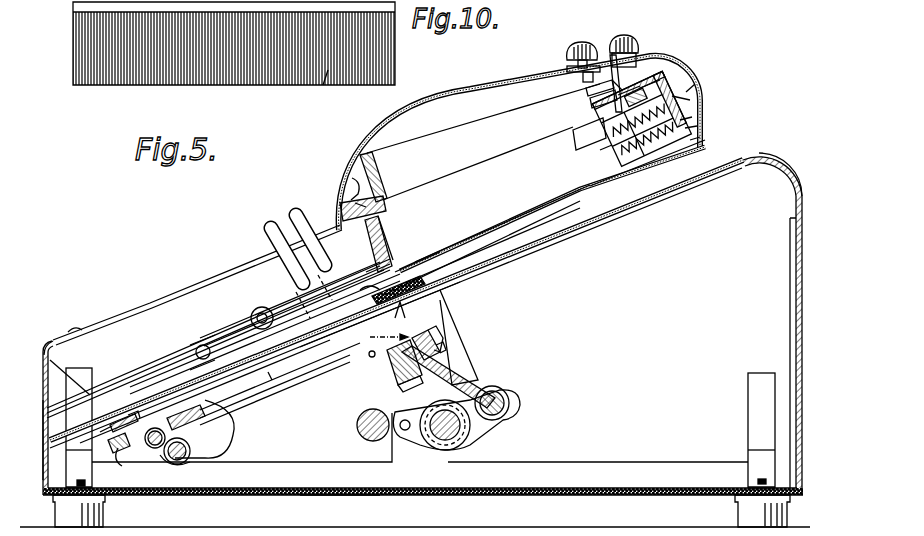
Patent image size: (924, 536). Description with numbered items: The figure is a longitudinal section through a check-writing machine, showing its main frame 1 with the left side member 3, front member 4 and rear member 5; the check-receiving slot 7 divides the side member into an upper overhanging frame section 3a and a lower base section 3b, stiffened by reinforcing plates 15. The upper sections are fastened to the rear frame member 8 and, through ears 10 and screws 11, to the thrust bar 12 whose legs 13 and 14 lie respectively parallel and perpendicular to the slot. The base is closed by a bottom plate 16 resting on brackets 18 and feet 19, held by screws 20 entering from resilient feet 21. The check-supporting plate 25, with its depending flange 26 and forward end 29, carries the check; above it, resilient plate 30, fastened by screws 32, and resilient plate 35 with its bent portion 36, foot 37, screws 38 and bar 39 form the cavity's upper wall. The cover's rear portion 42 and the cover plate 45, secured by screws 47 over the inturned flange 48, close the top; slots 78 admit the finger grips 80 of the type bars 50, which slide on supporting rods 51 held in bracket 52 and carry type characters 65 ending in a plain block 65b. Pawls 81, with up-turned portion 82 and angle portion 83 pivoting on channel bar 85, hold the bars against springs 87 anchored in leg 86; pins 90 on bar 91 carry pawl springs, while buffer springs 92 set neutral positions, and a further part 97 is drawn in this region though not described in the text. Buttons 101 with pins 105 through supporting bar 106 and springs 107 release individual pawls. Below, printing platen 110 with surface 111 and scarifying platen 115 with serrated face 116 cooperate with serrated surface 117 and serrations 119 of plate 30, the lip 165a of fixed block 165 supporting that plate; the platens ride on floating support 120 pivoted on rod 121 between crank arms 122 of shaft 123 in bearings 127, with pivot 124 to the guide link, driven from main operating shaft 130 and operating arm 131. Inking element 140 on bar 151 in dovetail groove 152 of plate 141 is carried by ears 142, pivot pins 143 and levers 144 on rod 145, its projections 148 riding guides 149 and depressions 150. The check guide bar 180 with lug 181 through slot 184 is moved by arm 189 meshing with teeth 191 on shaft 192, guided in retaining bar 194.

In FIG. 5, the main frame 1 is at (48, 498).
In FIG. 5, the left side member 3 is at (624, 362).
In FIG. 5, the upper overhanging frame section 3a is at (432, 105).
In FIG. 5, the lower base section 3b is at (616, 284).
In FIG. 5, the front member 4 is at (43, 440).
In FIG. 5, the rear member 5 is at (790, 330).
In FIG. 5, the check-receiving slot 7 is at (182, 369).
In FIG. 5, the rear frame member 8 is at (370, 158).
In FIG. 5, the ears 10 is at (355, 203).
In FIG. 5, the screws 11 is at (352, 180).
In FIG. 5, the thrust bar 12 is at (384, 190).
In FIG. 5, the leg 13 is at (340, 212).
In FIG. 5, the second leg 14 is at (358, 150).
In FIG. 5, the reinforcing plates 15 is at (150, 310).
In FIG. 5, the bottom plate 16 is at (335, 496).
In FIG. 5, the brackets 18 is at (88, 471).
In FIG. 5, the feet 19 is at (66, 487).
In FIG. 5, the screws 20 is at (76, 482).
In FIG. 5, the feet 21 is at (103, 515).
In FIG. 5, the check-supporting plate 25 is at (638, 216).
In FIG. 5, the depending flange 26 is at (801, 185).
In FIG. 5, the forward end 29 is at (106, 435).
In FIG. 10, the resilient plate 30 is at (73, 33).
In FIG. 5, the resilient plate 30 is at (625, 187).
In FIG. 5, the screws 32 is at (700, 137).
In FIG. 5, the resilient plate 35 is at (196, 384).
In FIG. 5, the portion 36 is at (136, 412).
In FIG. 5, the portion 37 is at (108, 429).
In FIG. 5, the screws 38 is at (135, 445).
In FIG. 5, the transversely extending bar 39 is at (116, 420).
In FIG. 5, the rear portion 42 is at (692, 84).
In FIG. 5, the plate 45 is at (256, 257).
In FIG. 5, the screws 47 is at (74, 330).
In FIG. 5, the inturned flange 48 is at (47, 351).
In FIG. 5, the type bars 50 is at (506, 205).
In FIG. 5, the supporting rod 51 is at (186, 349).
In FIG. 5, the bracket 52 is at (82, 382).
In FIG. 5, the type characters 65 is at (515, 224).
In FIG. 5, the plain block 65b is at (612, 184).
In FIG. 5, the slot 78 is at (206, 281).
In FIG. 5, the finger grip 80 is at (292, 214).
In FIG. 5, the pawls 81 is at (578, 130).
In FIG. 5, the up-turned portion 82 is at (655, 84).
In FIG. 5, the angle portion 83 is at (690, 100).
In FIG. 5, the channel bar 85 is at (692, 117).
In FIG. 5, the second leg 86 is at (697, 126).
In FIG. 5, the springs 87 is at (605, 146).
In FIG. 5, the pins 90 is at (640, 82).
In FIG. 5, the transversely extending bar 91 is at (620, 76).
In FIG. 5, the buffer spring 92 is at (672, 165).
In FIG. 5, the rod 97 is at (609, 88).
In FIG. 5, the buttons 101 is at (570, 44).
In FIG. 5, the pin 105 is at (610, 112).
In FIG. 5, the supporting bar 106 is at (606, 104).
In FIG. 5, the spring 107 is at (600, 93).
In FIG. 5, the printing and scarifying platen 110 is at (400, 385).
In FIG. 5, the upper surface 111 is at (390, 373).
In FIG. 5, the scarifying platen 115 is at (421, 345).
In FIG. 5, the serrated face 116 is at (416, 341).
In FIG. 10, the serrated surface 117 is at (326, 78).
In FIG. 5, the serrated surface 117 is at (462, 290).
In FIG. 5, the serrations 119 is at (405, 310).
In FIG. 5, the floating support 120 is at (486, 380).
In FIG. 5, the rod 121 is at (508, 405).
In FIG. 5, the levers or crank arms 122 is at (495, 434).
In FIG. 5, the shaft 123 is at (468, 446).
In FIG. 5, the pivot 124 is at (438, 343).
In FIG. 5, the bearings 127 is at (402, 444).
In FIG. 5, the main operating shaft 130 is at (357, 425).
In FIG. 5, the operating arm 131 is at (508, 267).
In FIG. 5, the inking element 140 is at (366, 272).
In FIG. 5, the supporting plate 141 is at (292, 304).
In FIG. 5, the ears 142 is at (202, 336).
In FIG. 5, the pivot pins 143 is at (176, 353).
In FIG. 5, the levers 144 is at (242, 410).
In FIG. 5, the rod 145 is at (196, 464).
In FIG. 5, the projection 148 is at (372, 296).
In FIG. 5, the guides 149 is at (240, 320).
In FIG. 5, the depressions 150 is at (366, 286).
In FIG. 5, the bar 151 is at (365, 250).
In FIG. 5, the dovetail groove 152 is at (416, 286).
In FIG. 5, the fixed printing block 165 is at (386, 246).
In FIG. 5, the lip 165a is at (425, 264).
In FIG. 5, the bar 180 is at (256, 393).
In FIG. 5, the lug 181 is at (285, 380).
In FIG. 5, the slot 184 is at (300, 357).
In FIG. 5, the arm 189 is at (186, 419).
In FIG. 5, the teeth 191 is at (184, 441).
In FIG. 5, the shaft 192 is at (172, 466).
In FIG. 5, the retaining bar 194 is at (121, 465).